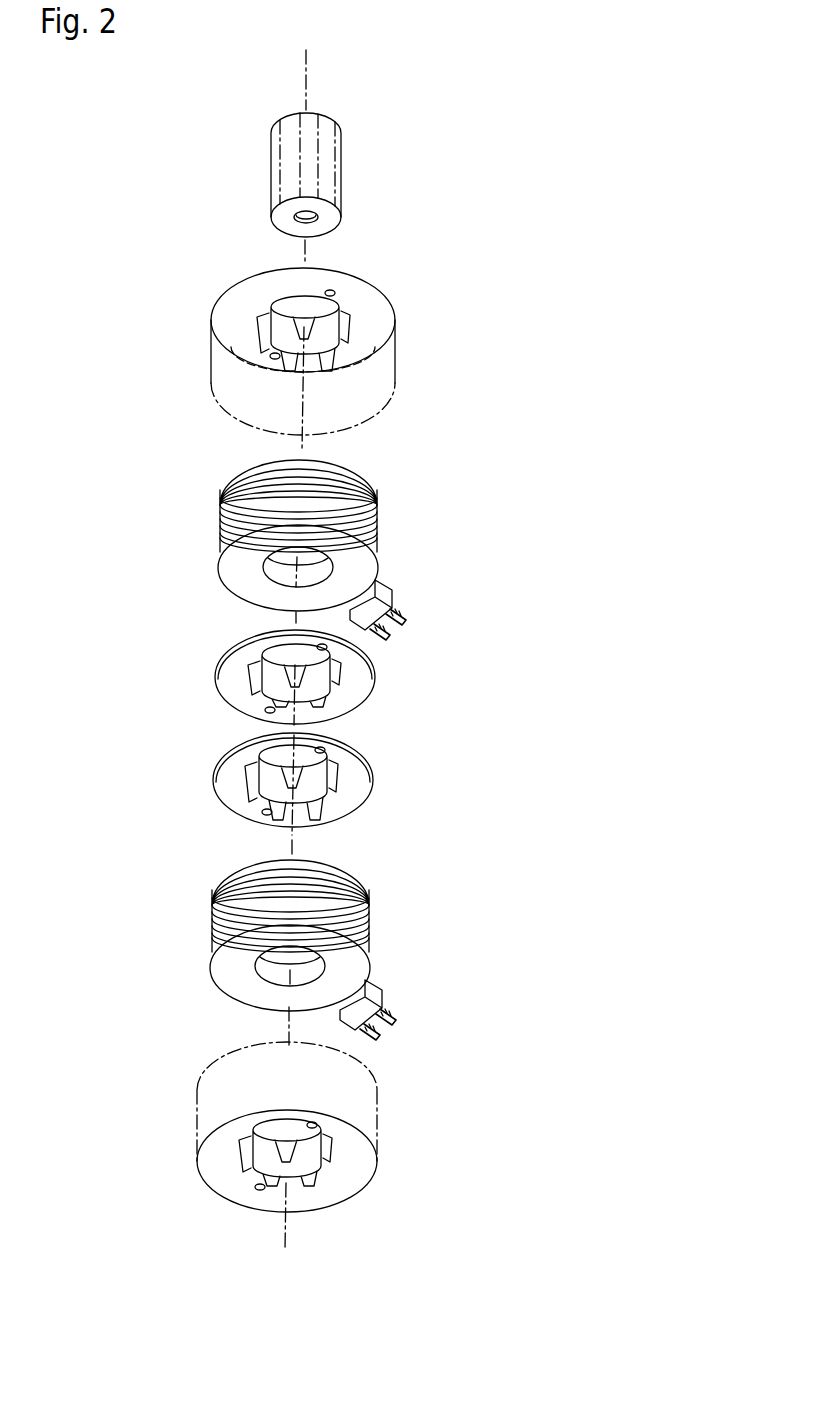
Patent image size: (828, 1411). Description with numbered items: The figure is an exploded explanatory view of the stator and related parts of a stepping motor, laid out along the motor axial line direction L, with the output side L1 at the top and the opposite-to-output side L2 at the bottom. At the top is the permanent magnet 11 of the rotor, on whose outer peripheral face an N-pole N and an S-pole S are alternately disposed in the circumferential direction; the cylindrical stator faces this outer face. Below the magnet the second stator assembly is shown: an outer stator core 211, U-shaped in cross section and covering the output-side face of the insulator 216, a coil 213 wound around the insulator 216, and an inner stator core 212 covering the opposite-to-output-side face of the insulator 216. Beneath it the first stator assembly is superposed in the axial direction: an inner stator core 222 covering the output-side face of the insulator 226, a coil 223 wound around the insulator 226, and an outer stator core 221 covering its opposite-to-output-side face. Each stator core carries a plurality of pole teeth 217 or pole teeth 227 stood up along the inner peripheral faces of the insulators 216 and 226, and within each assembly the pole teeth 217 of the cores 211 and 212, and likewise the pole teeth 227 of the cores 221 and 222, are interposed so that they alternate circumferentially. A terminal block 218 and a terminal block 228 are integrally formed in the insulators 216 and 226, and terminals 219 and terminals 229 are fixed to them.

The permanent magnet 11 is at (342, 158).
The motor axial line direction L is at (308, 550).
The output side L1 is at (311, 64).
The opposite-to-output side L2 is at (283, 1237).
The S-pole S is at (310, 140).
The N-pole N is at (325, 177).
The stator core 211 is at (380, 287).
The stator core 212 is at (375, 672).
The coil 213 is at (357, 513).
The insulator 216 is at (362, 558).
The pole teeth 217 is at (312, 313).
The terminal block 218 is at (393, 590).
The terminals 219 is at (388, 636).
The stator core 221 is at (362, 1165).
The stator core 222 is at (373, 763).
The coil 223 is at (343, 912).
The insulator 226 is at (352, 962).
The pole teeth 227 is at (247, 773).
The terminal block 228 is at (375, 992).
The terminals 229 is at (383, 1037).